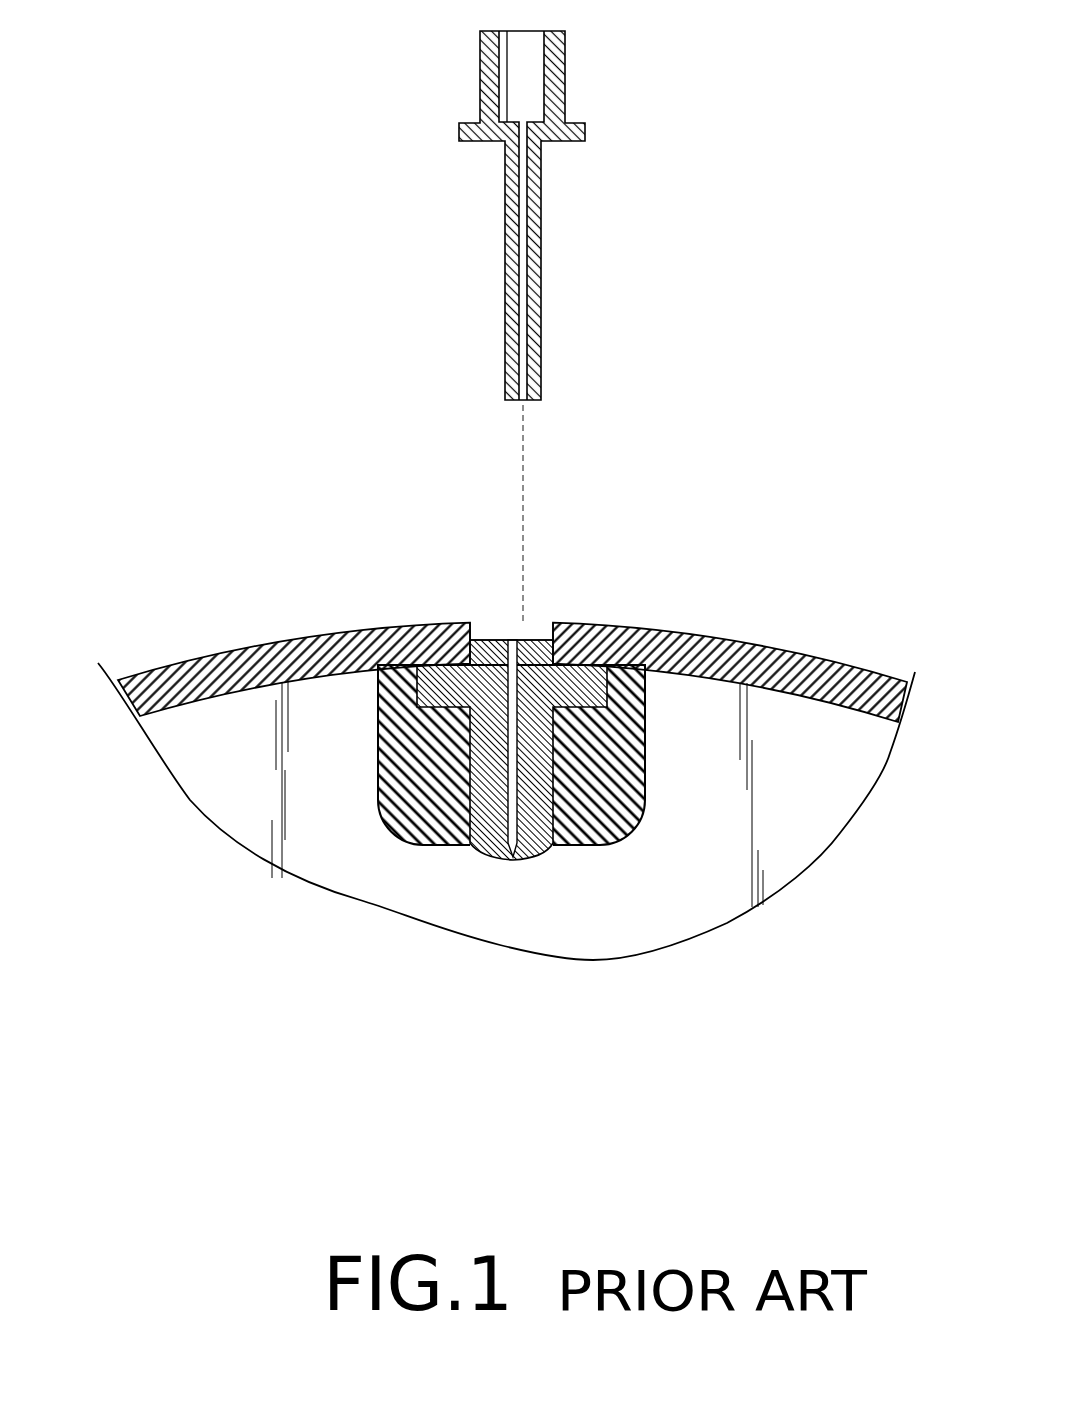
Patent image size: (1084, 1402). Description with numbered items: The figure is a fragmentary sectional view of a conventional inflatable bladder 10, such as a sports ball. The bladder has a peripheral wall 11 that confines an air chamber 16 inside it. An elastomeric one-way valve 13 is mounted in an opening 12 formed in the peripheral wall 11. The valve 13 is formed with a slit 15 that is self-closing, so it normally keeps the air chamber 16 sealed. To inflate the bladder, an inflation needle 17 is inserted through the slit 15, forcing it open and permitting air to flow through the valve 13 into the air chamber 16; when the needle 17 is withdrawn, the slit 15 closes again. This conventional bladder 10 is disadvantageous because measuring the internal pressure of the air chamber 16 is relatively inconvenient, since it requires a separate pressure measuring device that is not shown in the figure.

The inflatable bladder 10 is at (516, 495).
The peripheral wall 11 is at (787, 670).
The opening 12 is at (548, 630).
The elastomeric one-way valve 13 is at (582, 685).
The slit 15 is at (517, 747).
The air chamber 16 is at (767, 738).
The inflation needle 17 is at (541, 270).